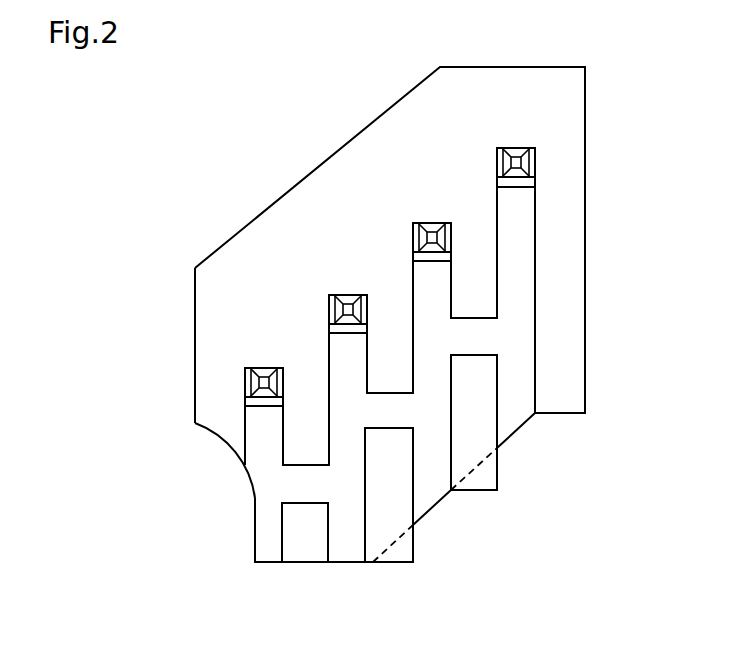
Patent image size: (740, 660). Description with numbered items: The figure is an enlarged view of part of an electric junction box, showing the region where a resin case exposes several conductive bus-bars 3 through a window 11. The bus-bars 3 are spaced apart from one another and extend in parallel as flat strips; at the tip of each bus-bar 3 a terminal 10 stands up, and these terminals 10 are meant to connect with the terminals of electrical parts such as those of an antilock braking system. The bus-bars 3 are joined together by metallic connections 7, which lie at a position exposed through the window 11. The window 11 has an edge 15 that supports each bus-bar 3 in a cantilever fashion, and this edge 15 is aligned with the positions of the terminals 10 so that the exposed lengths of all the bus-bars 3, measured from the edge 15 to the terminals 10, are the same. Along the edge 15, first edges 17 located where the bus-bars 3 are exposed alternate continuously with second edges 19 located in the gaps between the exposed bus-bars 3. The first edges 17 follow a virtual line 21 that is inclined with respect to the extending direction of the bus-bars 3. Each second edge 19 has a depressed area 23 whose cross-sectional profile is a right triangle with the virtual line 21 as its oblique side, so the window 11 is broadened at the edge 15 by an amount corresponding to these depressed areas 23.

The window 11 is at (585, 87).
The terminals 10 is at (523, 167).
The bus-bars 3 is at (520, 233).
The connections 7 is at (285, 488).
The edge 15 is at (496, 594).
The first edges 17 is at (517, 433).
The second edges 19 is at (480, 492).
The virtual line 21 is at (475, 463).
The depressed area 23 is at (402, 553).